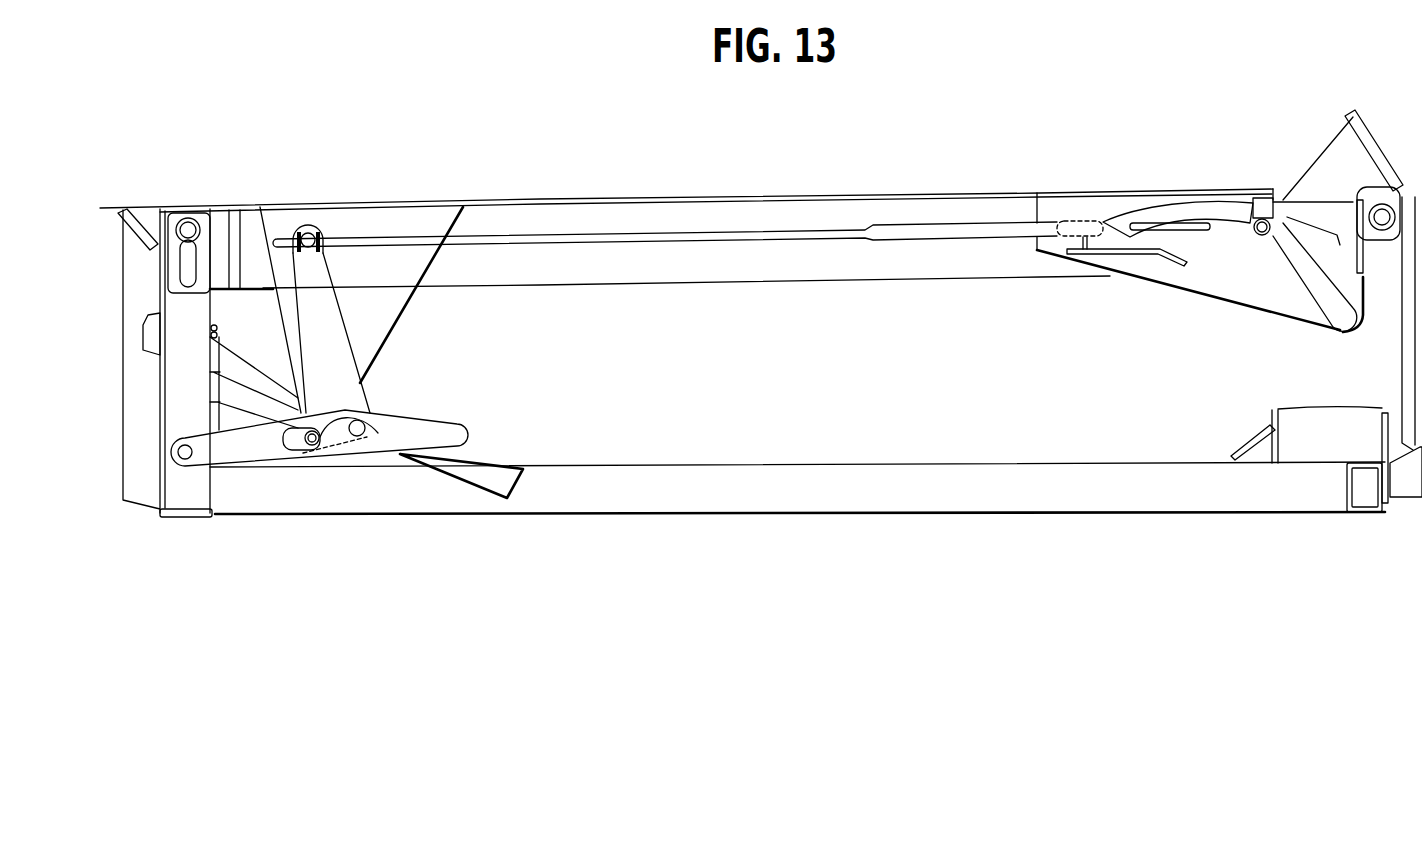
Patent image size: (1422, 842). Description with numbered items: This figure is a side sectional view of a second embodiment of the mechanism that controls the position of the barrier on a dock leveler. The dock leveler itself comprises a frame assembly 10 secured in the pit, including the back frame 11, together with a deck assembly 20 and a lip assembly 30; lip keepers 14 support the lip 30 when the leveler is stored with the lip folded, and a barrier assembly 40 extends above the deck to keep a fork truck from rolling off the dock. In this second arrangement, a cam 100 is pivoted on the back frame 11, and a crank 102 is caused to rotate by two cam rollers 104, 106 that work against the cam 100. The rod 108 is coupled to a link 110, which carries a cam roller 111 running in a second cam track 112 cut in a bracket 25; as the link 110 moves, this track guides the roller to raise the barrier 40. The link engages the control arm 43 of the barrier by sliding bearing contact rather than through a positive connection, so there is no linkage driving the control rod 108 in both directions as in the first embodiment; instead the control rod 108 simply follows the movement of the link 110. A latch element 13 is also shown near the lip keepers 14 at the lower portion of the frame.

The frame assembly 10 is at (817, 463).
The back frame 11 is at (200, 488).
The latch 13 is at (1303, 428).
The lip keepers 14 is at (1410, 480).
The deck assembly 20 is at (568, 198).
The bracket 25 is at (1220, 307).
The lip assembly 30 is at (1400, 355).
The barrier assembly 40 is at (1383, 153).
The control arm 43 is at (1337, 170).
The cam 100 is at (450, 418).
The crank 102 is at (340, 385).
The cam roller 104 is at (300, 450).
The cam roller 106 is at (360, 437).
The rod 108 is at (723, 232).
The link 110 is at (1153, 208).
The cam roller 111 is at (1270, 237).
The second cam track 112 is at (1307, 287).